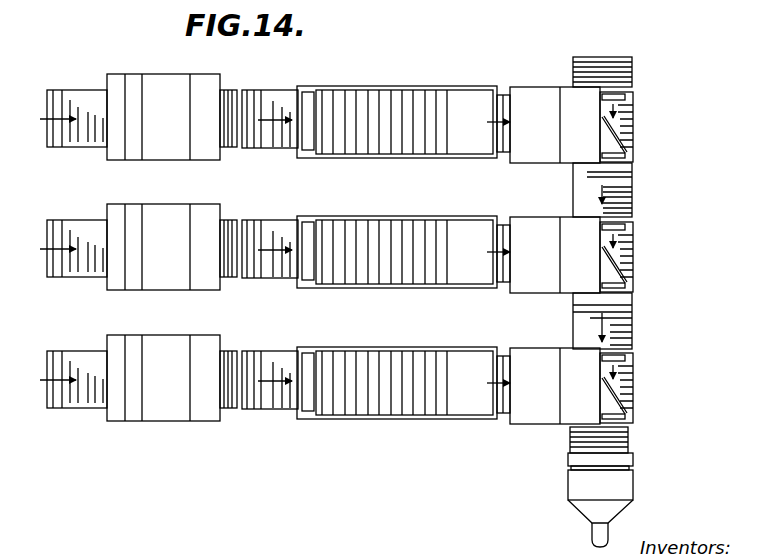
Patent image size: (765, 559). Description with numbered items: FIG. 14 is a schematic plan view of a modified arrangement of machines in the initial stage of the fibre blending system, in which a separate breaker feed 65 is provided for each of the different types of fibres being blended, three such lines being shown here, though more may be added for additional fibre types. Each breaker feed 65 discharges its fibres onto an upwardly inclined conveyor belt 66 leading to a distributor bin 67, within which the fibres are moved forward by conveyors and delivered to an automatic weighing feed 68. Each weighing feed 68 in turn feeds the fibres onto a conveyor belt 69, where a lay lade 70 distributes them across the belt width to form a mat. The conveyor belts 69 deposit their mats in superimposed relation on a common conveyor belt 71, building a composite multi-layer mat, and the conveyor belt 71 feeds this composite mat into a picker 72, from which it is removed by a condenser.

The breaker feed 65 is at (118, 78).
The upwardly inclined conveyor belt 66 is at (264, 94).
The distributor bin 67 is at (395, 93).
The automatic weighing feed 68 is at (530, 92).
The conveyor belt 69 is at (634, 127).
The lay lade 70 is at (625, 149).
The conveyor belt 71 is at (625, 199).
The picker 72 is at (580, 480).